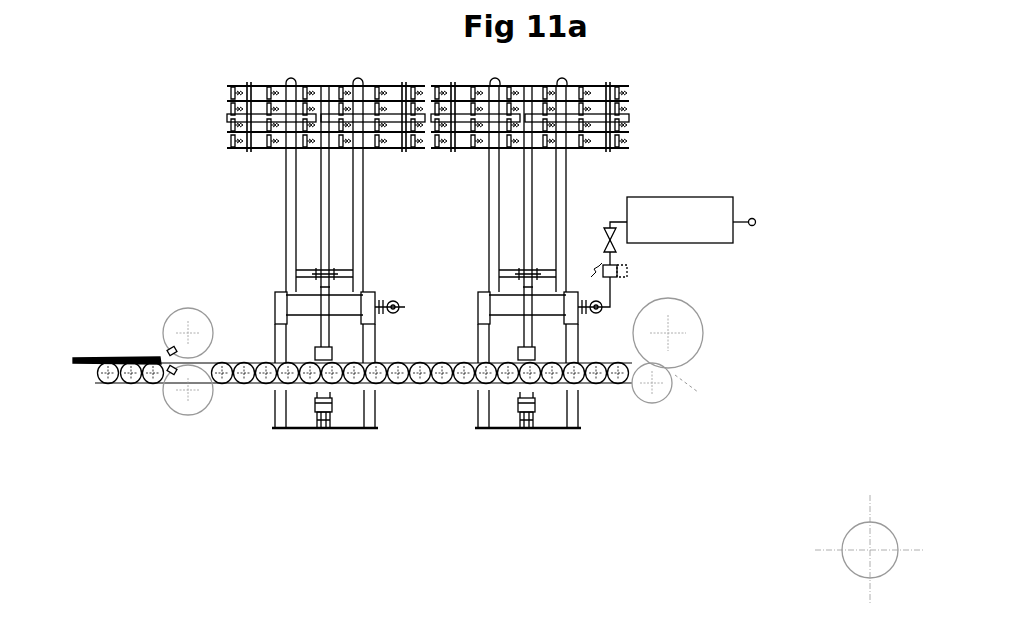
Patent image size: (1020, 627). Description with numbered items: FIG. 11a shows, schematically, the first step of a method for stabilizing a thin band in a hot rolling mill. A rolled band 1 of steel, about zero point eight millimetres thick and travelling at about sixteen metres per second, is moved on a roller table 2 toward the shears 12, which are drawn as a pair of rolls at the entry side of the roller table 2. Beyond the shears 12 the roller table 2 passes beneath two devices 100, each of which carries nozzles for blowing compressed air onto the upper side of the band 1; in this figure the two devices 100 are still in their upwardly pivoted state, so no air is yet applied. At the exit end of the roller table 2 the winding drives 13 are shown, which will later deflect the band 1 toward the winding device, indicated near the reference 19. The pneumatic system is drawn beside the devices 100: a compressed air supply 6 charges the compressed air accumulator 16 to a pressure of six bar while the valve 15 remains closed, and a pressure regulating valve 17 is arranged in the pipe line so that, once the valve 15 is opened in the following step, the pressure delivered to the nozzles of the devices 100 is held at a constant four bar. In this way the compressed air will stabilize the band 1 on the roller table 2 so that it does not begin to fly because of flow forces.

The device 100 is at (657, 110).
The band 1 is at (118, 352).
The roller table 2 is at (128, 398).
The shears 12 is at (186, 298).
The winding drives 13 is at (722, 318).
The valve 15 is at (598, 237).
The compressed air accumulator 16 is at (681, 232).
The pressure regulating valve 17 is at (640, 272).
The compressed air supply 6 is at (759, 217).
The reference mark 19 is at (735, 505).